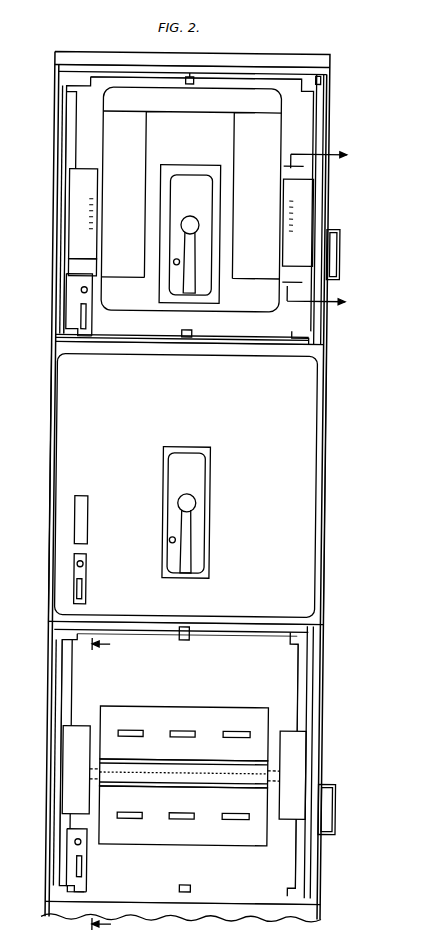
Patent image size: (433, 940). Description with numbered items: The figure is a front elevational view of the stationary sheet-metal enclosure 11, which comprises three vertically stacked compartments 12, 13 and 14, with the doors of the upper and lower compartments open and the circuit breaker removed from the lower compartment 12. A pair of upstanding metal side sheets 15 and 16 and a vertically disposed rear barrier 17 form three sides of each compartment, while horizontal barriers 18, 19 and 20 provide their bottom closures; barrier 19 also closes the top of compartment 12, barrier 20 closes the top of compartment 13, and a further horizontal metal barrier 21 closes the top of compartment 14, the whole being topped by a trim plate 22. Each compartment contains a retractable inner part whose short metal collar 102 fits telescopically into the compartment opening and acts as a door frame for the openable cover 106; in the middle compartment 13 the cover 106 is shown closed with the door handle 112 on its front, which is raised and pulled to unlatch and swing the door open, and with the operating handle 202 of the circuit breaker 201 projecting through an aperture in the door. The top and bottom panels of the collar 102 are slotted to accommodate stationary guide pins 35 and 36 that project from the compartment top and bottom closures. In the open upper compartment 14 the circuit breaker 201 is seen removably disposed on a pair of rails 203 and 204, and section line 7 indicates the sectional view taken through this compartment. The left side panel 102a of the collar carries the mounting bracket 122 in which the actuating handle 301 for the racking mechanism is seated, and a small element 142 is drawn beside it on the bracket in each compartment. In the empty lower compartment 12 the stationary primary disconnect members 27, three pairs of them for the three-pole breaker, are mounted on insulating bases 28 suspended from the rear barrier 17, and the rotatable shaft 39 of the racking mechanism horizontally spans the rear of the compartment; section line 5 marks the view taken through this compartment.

The trim plate 22 is at (299, 60).
The horizontally disposed metal barrier 21 is at (318, 78).
The left side panel 102a is at (63, 116).
The collar 102 is at (124, 80).
The guide pin 35 is at (193, 85).
The openable cover 106 is at (318, 118).
The circuit breaker 201 is at (98, 149).
The section line 7- 7 is at (325, 228).
The rail 204 is at (284, 206).
The rail 203 is at (94, 234).
The operating handle 202 is at (193, 243).
The pivot pin 142 is at (86, 291).
The mounting bracket 122 is at (66, 317).
The guide pin 36 is at (190, 329).
The compartment 14 is at (191, 207).
The actuating handle 301 is at (85, 331).
The horizontal barrier 20 is at (325, 351).
The side sheet 15 is at (50, 404).
The side sheet 16 is at (325, 410).
The enclosure 11 is at (36, 483).
The compartment 13 is at (187, 488).
The horizontal barrier 19 is at (238, 623).
The door handle 112 is at (339, 249).
The rear barrier 17 is at (295, 668).
The insulating base 28 is at (118, 708).
The stationary primary disconnect member 27 is at (138, 731).
The shaft 39 is at (210, 769).
The compartment 12 is at (179, 762).
The section line 5- 5 is at (108, 785).
The horizontal barrier 18 is at (221, 905).